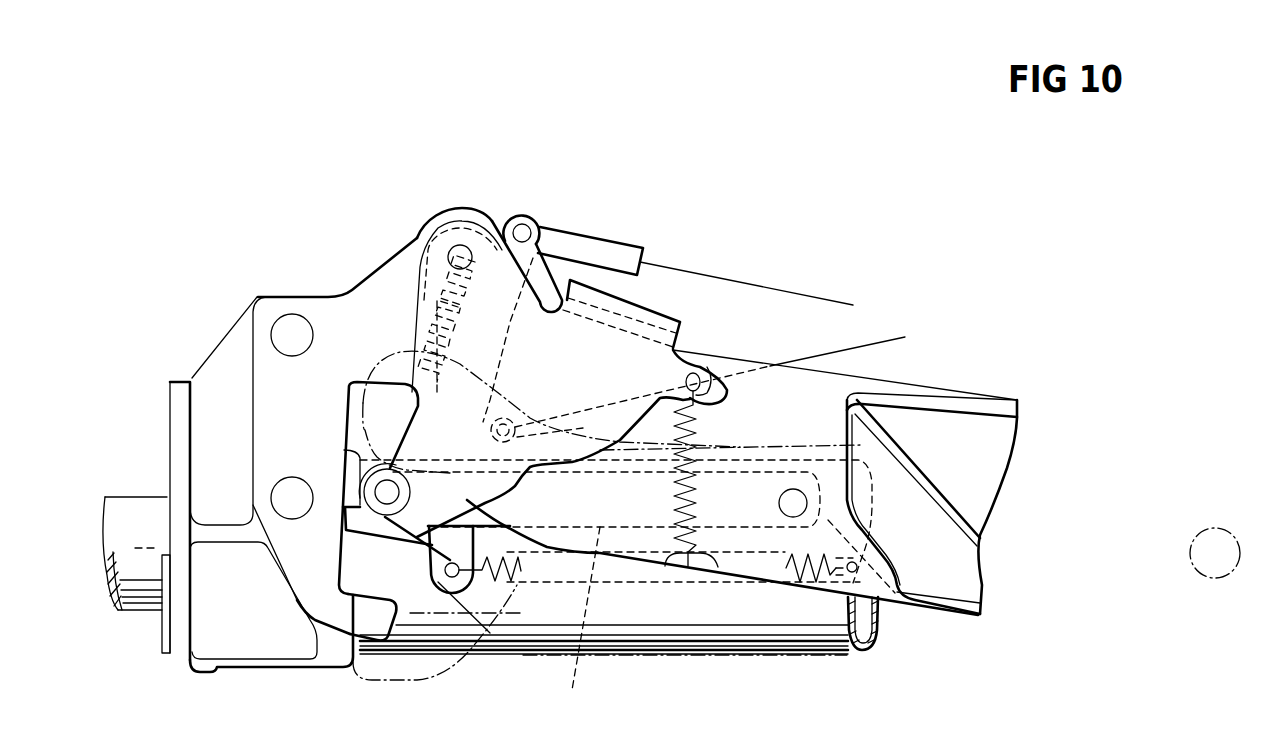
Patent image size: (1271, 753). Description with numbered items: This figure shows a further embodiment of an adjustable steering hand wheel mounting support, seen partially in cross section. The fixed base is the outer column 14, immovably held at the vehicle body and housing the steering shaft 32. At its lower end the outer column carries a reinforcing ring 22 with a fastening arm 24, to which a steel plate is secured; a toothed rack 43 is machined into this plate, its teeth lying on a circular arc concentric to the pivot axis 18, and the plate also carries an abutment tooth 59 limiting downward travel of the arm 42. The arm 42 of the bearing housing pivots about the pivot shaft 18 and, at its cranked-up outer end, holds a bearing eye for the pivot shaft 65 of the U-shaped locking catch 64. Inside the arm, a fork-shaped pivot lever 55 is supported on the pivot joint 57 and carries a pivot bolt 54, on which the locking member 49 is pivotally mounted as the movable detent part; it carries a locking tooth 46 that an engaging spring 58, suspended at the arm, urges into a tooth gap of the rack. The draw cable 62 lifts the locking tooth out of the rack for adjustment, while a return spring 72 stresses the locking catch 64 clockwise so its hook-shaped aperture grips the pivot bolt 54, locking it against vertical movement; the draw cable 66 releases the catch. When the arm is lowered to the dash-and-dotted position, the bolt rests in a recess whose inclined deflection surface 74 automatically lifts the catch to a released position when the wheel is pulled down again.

The outer column 14 is at (653, 628).
The pivot shaft 18 is at (1201, 573).
The reinforcing ring 22 is at (247, 633).
The fastening arm 24 is at (222, 378).
The steering shaft 32 is at (153, 585).
The arm 42 is at (925, 383).
The toothed rack 43 is at (388, 287).
The locking tooth 46 is at (467, 320).
The locking member 49 is at (496, 377).
The pivot bolt 54 is at (383, 493).
The pivot lever 55 is at (572, 690).
The pivot joint 57 is at (780, 504).
The engaging spring 58 is at (498, 578).
The abutment tooth 59 is at (358, 610).
The draw cable 62 is at (782, 285).
The locking catch 64 is at (648, 307).
The pivot shaft of the locking catch 65 is at (485, 250).
The draw cable 66 is at (853, 347).
The return spring 72 is at (695, 447).
The inclined deflection surface 74 is at (393, 462).